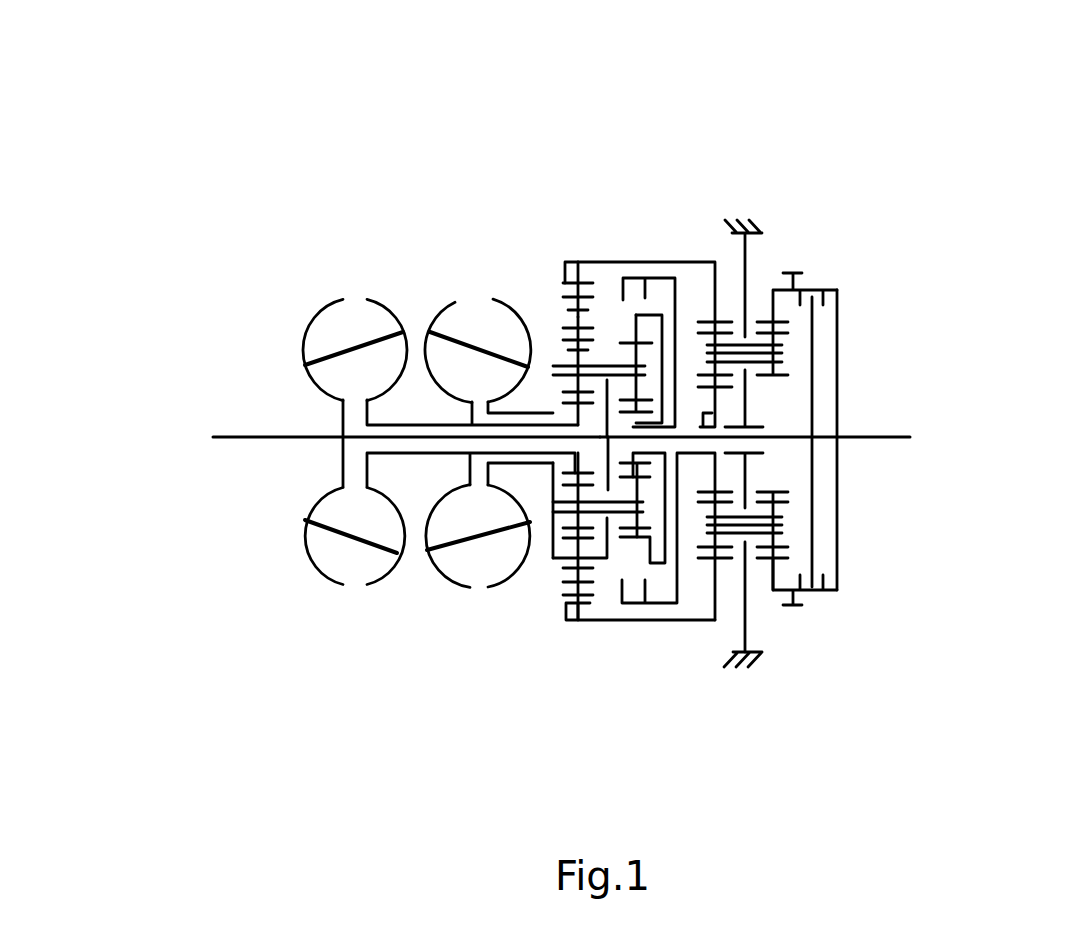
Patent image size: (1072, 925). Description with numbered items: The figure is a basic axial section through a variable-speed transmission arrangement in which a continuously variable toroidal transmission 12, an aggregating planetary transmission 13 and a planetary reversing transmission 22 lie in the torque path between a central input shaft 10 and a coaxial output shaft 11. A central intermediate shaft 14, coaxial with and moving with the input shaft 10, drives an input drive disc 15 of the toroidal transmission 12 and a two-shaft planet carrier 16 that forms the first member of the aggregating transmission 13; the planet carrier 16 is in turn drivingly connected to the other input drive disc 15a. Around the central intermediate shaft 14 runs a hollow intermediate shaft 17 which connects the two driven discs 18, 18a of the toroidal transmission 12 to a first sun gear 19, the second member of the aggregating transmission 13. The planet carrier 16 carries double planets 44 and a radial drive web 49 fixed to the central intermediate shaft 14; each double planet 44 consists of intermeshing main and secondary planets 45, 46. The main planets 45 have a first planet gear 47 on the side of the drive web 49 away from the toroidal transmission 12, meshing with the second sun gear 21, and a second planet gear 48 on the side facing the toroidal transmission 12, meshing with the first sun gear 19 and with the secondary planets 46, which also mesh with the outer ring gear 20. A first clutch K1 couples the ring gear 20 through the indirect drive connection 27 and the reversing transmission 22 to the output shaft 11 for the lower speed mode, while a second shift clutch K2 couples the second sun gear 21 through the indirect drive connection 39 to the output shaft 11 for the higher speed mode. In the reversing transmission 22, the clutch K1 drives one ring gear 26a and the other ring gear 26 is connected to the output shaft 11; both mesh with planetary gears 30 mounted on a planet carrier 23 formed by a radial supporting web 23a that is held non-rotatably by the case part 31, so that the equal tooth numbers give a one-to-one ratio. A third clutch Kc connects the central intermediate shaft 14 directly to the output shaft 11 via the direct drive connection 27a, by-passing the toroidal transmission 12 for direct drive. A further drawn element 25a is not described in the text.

The input shaft 10 is at (237, 437).
The output shaft 11 is at (910, 440).
The continuously variable toroidal transmission 12 is at (412, 130).
The aggregating planetary transmission 13 is at (617, 175).
The central intermediate shaft 14 is at (360, 385).
The input drive disc 15 is at (308, 318).
The other input drive disc 15a is at (493, 300).
The two-shaft planet carrier 16 is at (545, 562).
The hollow intermediate shaft 17 is at (578, 455).
The driven disc 18 is at (363, 302).
The driven disc 18a is at (455, 303).
The first sun gear 19 is at (359, 540).
The outer ring gear 20 is at (568, 597).
The second sun gear 21 is at (657, 412).
The planetary reversing transmission 22 is at (757, 175).
The planet carrier 23 is at (757, 622).
The radial supporting web 23a is at (750, 465).
The brake discs 25a is at (700, 492).
The ring gear 26 is at (758, 322).
The ring gear 26a is at (732, 322).
The indirect drive connection 27 is at (672, 250).
The direct drive connection 27a is at (840, 458).
The planetary gears 30 is at (792, 347).
The non-rotating case part 31 is at (750, 665).
The indirect drive connection 39 is at (705, 415).
The double planets 44 is at (550, 538).
The main planets 45 is at (612, 522).
The secondary planets 46 is at (572, 252).
The first planet gear 47 is at (640, 555).
The second planet gear 48 is at (595, 350).
The radial drive web 49 is at (550, 463).
The first clutch K1 is at (566, 298).
The second shift clutch K2 is at (637, 627).
The third clutch Kc is at (830, 265).